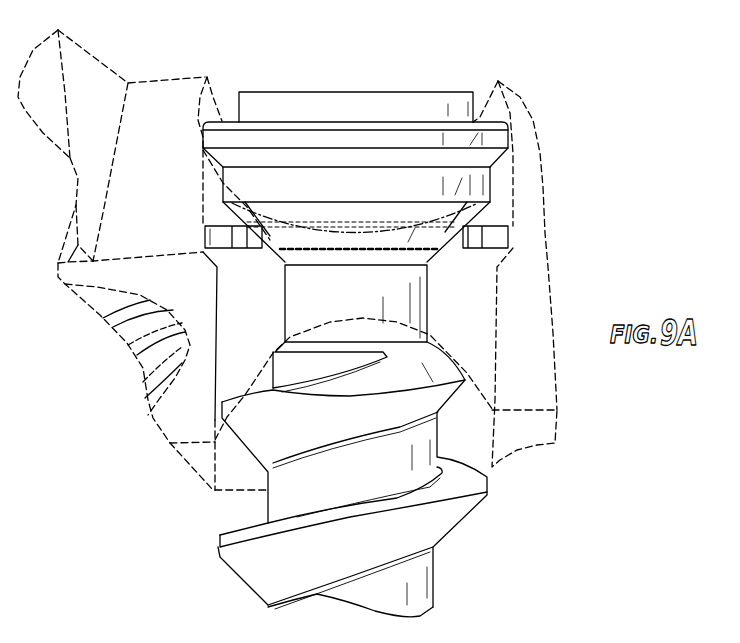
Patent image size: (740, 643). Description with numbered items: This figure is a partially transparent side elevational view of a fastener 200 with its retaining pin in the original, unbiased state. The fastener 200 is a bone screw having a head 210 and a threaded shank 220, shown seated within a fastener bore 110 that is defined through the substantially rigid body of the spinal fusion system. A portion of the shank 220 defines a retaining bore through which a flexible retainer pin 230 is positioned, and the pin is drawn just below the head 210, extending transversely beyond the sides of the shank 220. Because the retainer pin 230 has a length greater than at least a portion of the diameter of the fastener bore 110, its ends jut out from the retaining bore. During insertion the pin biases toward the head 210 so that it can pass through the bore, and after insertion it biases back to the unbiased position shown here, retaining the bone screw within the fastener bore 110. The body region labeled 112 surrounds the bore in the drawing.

The fastener bore 110 is at (460, 443).
The bone 112 is at (495, 300).
The fastener 200 is at (218, 545).
The head 210 is at (457, 98).
The threaded shank 220 is at (432, 587).
The flexible retainer pin 230 is at (497, 240).